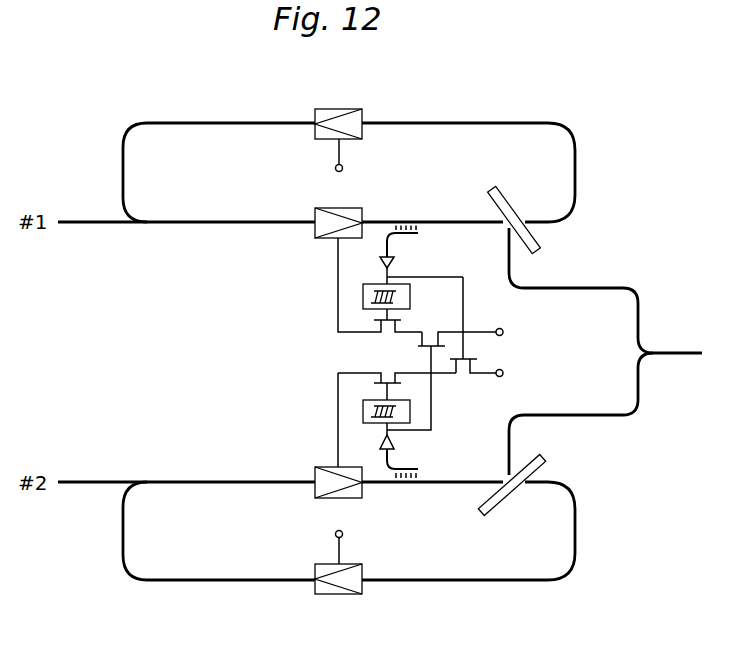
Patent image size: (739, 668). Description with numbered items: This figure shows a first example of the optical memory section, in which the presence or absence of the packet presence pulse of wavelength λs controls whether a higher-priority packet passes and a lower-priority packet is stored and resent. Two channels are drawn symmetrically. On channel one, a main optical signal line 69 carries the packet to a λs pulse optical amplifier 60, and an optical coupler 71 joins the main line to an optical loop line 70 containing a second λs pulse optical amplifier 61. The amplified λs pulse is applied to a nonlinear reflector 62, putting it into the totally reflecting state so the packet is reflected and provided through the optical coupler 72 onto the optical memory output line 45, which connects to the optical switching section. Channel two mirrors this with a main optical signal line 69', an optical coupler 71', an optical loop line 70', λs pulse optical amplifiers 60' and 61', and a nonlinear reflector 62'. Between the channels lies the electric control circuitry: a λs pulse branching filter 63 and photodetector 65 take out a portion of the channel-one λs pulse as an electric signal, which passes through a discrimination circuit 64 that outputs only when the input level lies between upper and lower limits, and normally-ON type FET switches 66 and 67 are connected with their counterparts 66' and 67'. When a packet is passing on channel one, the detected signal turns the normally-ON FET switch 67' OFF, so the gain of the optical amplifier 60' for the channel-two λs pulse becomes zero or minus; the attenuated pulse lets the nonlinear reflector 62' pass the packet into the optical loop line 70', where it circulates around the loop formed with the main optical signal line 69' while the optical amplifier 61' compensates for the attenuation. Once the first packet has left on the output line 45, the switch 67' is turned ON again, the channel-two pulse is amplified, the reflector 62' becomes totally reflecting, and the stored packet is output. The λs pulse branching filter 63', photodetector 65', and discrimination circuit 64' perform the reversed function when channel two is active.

The optical memory output line 45 is at (692, 357).
The λs pulse optical amplifier 60 is at (326, 205).
The λs pulse optical amplifier 61 is at (338, 120).
The nonlinear reflector 62 is at (515, 212).
The λs pulse branching filter 63 is at (402, 215).
The discrimination circuit 64 is at (375, 305).
The photodetector 65 is at (421, 265).
The normally-ON type FET switch 66 is at (377, 297).
The normally-ON type FET switch 67 is at (445, 362).
The main optical signal line 69 is at (186, 247).
The optical loop line 70 is at (361, 152).
The optical coupler 71 is at (131, 197).
The optical coupler 72 is at (648, 358).
The λs pulse optical amplifier 60' is at (315, 499).
The λs pulse optical amplifier 61' is at (338, 587).
The nonlinear reflector 62' is at (511, 500).
The λs pulse branching filter 63' is at (402, 490).
The discrimination circuit 64' is at (374, 425).
The photodetector 65' is at (422, 437).
The normally-ON type FET switch 66' is at (397, 401).
The normally-ON type FET switch 67' is at (476, 347).
The main optical signal line 69' is at (186, 457).
The optical loop line 70' is at (361, 554).
The optical coupler 71' is at (135, 506).